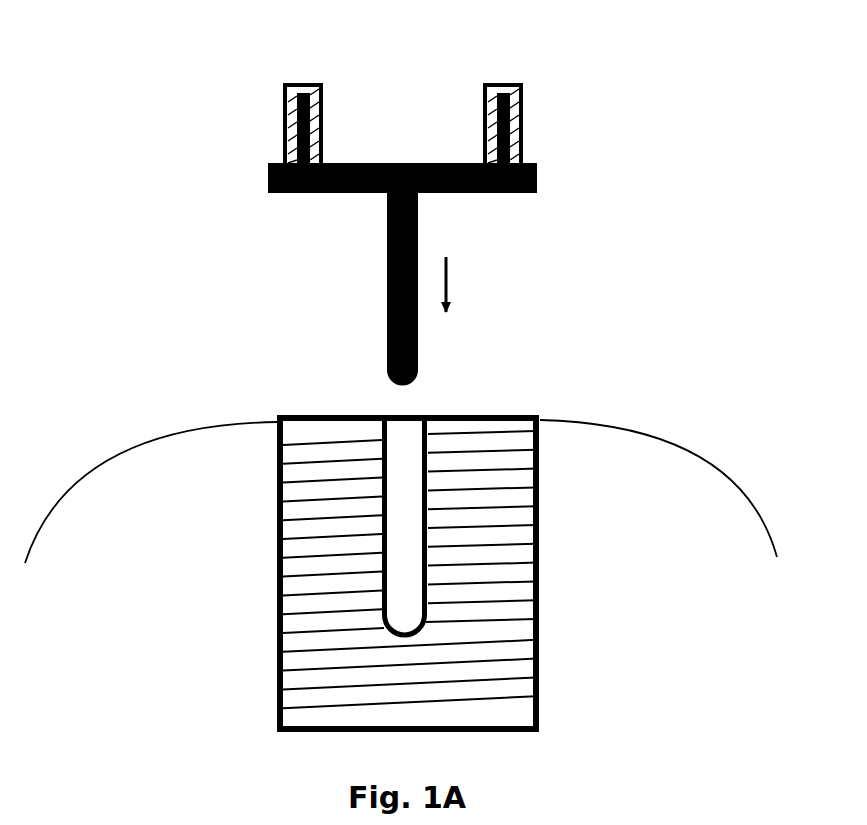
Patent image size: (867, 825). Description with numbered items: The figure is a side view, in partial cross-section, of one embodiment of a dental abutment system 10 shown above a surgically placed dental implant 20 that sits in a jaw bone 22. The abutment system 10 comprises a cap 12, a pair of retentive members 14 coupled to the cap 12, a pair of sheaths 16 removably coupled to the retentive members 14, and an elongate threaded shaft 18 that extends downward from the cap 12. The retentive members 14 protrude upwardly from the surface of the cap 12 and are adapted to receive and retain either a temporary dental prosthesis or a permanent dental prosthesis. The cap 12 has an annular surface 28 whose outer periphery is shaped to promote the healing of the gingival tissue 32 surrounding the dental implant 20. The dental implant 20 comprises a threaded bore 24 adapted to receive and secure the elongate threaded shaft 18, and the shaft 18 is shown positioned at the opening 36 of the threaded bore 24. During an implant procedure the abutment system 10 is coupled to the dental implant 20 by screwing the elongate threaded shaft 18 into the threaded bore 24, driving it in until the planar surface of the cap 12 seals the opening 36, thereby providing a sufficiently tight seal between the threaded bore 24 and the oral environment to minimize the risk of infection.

The dental abutment system 10 is at (522, 50).
The cap 12 is at (268, 185).
The retentive members 14 is at (283, 120).
The sheaths 16 is at (282, 93).
The elongate threaded shaft 18 is at (385, 298).
The dental implant 20 is at (545, 565).
The jaw bone 22 is at (184, 529).
The threaded bore 24 is at (415, 580).
The annular surface 28 is at (407, 158).
The gingival tissue 32 is at (272, 413).
The opening 36 is at (393, 437).